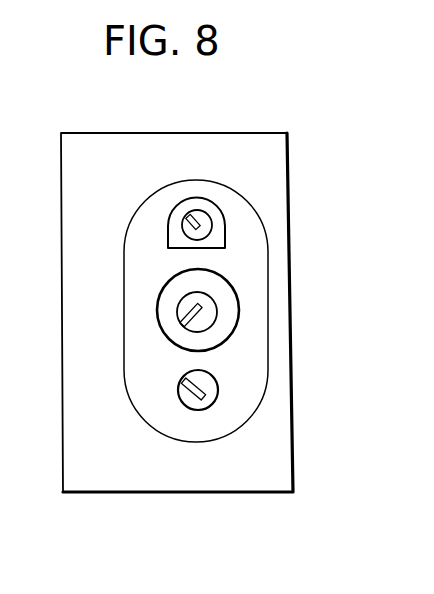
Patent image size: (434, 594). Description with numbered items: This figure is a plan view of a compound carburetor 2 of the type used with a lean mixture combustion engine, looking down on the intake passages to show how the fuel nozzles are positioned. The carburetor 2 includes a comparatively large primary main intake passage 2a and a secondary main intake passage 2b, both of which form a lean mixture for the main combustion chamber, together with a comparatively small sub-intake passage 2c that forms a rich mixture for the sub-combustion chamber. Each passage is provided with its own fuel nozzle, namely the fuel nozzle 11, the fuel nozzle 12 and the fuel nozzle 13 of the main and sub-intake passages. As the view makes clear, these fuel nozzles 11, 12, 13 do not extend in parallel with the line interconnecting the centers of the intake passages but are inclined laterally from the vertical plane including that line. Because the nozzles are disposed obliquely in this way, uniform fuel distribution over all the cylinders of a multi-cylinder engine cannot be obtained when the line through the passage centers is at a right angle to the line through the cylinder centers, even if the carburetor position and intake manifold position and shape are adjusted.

The carburetor 2 is at (258, 172).
The primary main intake passage 2a is at (208, 383).
The secondary main intake passage 2b is at (205, 317).
The sub-intake passage 2c is at (203, 228).
The fuel nozzle 11 is at (189, 398).
The fuel nozzle 12 is at (213, 301).
The fuel nozzle 13 is at (199, 218).